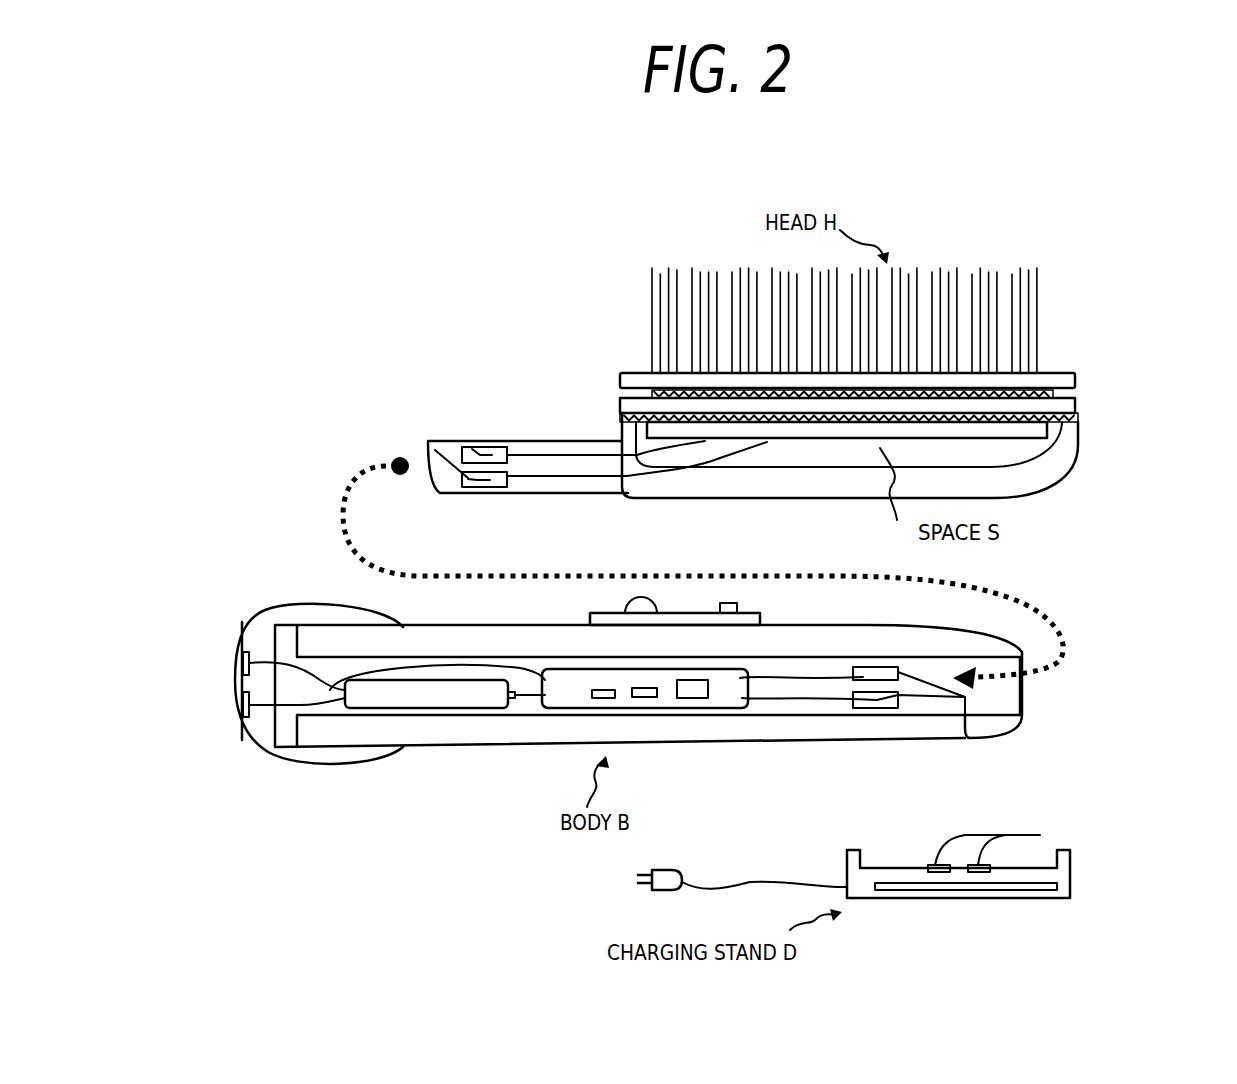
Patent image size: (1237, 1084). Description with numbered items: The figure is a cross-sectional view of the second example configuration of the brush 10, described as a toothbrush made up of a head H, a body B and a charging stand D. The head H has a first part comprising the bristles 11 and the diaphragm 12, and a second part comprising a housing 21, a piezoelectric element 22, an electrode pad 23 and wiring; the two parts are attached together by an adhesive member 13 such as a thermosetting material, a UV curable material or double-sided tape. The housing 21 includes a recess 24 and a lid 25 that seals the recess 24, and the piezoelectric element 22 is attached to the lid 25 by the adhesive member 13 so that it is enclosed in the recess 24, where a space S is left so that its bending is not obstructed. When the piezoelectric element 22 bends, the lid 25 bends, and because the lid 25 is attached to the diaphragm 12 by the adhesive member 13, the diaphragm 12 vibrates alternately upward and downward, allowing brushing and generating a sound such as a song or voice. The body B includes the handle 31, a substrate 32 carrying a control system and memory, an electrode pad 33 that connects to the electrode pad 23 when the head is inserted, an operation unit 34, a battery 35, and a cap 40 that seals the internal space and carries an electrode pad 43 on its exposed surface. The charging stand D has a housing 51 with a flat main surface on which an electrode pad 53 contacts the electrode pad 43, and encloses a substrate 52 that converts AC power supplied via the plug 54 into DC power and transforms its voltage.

The brush 10 is at (1182, 503).
The bristles 11 is at (652, 305).
The diaphragm 12 is at (638, 380).
The adhesive member 13 is at (633, 397).
The housing 21 is at (1040, 483).
The piezoelectric element 22 is at (953, 432).
The electrode pad 23 is at (437, 440).
The recess 24 is at (810, 452).
The lid 25 is at (1073, 405).
The handle 31 is at (793, 728).
The substrate 32 is at (625, 693).
The electrode pad 33 is at (980, 737).
The operation unit 34 is at (750, 615).
The battery 35 is at (388, 697).
The cap 40 is at (252, 743).
The electrode pad 43 is at (240, 690).
The housing 51 is at (1063, 873).
The substrate 52 is at (932, 885).
The electrode pad 53 is at (1040, 835).
The plug 54 is at (663, 882).